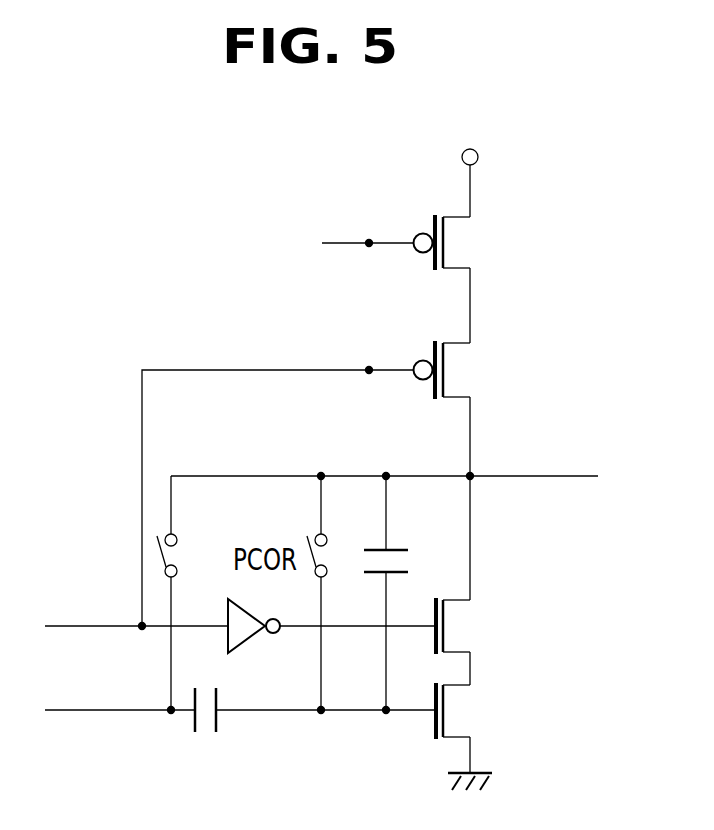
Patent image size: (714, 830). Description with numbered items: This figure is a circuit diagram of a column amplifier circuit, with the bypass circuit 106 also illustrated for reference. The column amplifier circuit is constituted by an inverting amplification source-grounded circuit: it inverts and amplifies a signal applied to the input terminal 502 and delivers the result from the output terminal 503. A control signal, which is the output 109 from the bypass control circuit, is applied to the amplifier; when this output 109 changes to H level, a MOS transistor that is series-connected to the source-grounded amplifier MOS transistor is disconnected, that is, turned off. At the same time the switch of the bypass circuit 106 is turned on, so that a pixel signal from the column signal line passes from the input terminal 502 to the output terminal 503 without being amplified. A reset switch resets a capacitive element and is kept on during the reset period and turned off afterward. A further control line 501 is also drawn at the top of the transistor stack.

The power control signal line 501 is at (360, 225).
The bypass circuit 106 is at (180, 555).
The output V109 from the bypass control circuit 109 is at (136, 612).
The input terminal 502 is at (240, 703).
The output terminal 503 is at (384, 459).